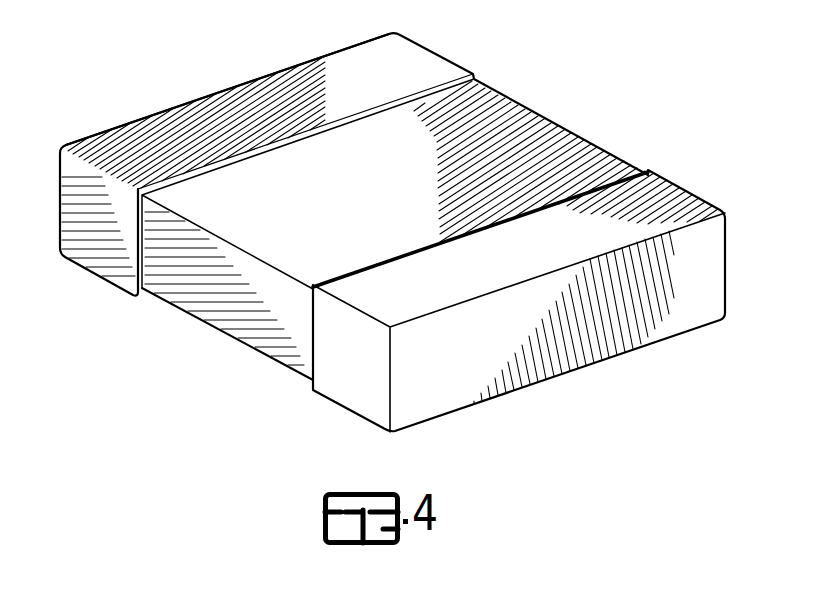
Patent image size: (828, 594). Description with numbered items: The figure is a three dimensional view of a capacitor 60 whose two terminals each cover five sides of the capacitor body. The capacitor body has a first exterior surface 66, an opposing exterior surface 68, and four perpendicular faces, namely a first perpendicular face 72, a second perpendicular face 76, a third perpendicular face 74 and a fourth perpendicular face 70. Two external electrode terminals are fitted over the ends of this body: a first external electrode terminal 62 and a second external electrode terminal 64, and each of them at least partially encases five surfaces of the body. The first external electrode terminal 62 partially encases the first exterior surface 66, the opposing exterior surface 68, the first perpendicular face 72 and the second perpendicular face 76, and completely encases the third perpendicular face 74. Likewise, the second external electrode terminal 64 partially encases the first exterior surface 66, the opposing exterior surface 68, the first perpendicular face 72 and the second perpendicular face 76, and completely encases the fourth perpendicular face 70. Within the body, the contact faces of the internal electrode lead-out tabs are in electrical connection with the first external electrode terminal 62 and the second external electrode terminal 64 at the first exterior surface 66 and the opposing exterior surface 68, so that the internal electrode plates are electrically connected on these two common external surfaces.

The capacitor 60 is at (570, 65).
The first external electrode terminal 62 is at (170, 128).
The second external electrode terminal 64 is at (687, 189).
The first exterior surface 66 is at (257, 352).
The opposing exterior surface 68 is at (593, 147).
The fourth perpendicular face 70 is at (565, 337).
The first perpendicular face 72 is at (190, 280).
The third perpendicular face 74 is at (548, 114).
The second perpendicular face 76 is at (226, 80).